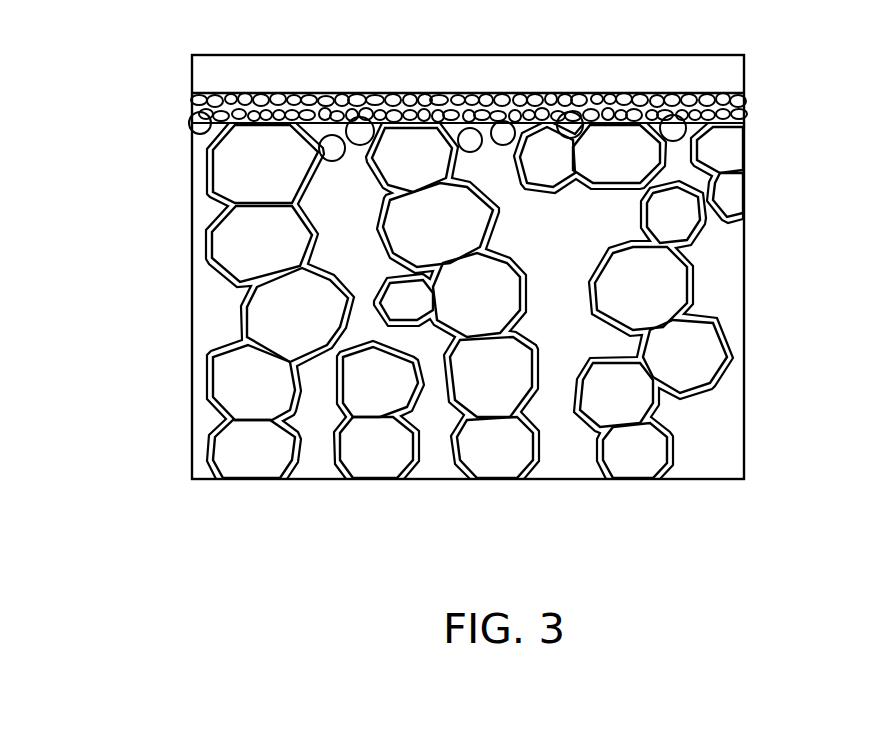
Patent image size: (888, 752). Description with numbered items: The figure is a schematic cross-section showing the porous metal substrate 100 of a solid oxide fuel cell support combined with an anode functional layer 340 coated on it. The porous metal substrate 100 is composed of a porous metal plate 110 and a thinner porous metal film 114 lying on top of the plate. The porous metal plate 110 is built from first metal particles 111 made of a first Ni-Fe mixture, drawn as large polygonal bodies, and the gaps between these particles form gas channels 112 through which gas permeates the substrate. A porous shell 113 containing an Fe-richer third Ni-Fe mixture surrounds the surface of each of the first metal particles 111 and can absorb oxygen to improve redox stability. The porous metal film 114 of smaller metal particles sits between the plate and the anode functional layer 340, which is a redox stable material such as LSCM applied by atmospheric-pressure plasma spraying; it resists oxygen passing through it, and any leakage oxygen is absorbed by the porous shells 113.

The porous metal substrate 100 is at (795, 200).
The porous metal plate 110 is at (737, 270).
The first metal particles 111 is at (255, 173).
The gas channels 112 is at (558, 468).
The porous shell 113 is at (212, 153).
The porous metal film 114 is at (738, 113).
The anode functional layer 340 is at (737, 77).